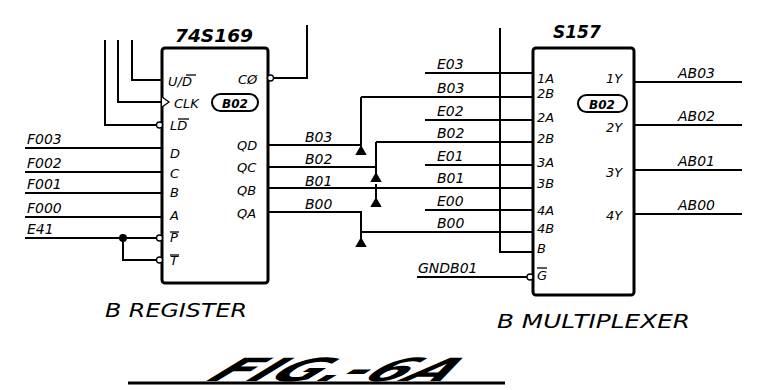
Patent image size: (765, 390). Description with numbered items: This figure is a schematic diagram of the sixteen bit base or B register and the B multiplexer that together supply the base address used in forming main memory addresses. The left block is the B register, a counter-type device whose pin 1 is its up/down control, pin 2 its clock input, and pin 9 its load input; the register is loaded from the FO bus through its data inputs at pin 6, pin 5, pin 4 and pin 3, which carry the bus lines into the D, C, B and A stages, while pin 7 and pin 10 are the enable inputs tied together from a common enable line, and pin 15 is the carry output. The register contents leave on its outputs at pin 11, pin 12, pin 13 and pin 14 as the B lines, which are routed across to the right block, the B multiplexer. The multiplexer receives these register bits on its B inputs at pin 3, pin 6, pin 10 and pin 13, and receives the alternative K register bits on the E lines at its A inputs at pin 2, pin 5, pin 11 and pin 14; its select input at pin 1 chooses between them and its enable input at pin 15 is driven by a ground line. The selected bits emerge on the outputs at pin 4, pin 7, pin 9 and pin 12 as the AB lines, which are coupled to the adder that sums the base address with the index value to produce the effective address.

The pin 1 (U/D input of B register; B select input of multiplexer) 1 is at (332, 140).
The pin 2 (CLK input of B register; 1A input of multiplexer) 2 is at (325, 73).
The pin 3 (A input of B register; 2B input of multiplexer) 3 is at (279, 149).
The pin 4 (B input of B register; 1Y output of multiplexer) 4 is at (383, 129).
The pin 5 (C input of B register; 2A input of multiplexer) 5 is at (279, 138).
The pin 6 (D input of B register; 2B input of multiplexer) 6 is at (279, 137).
The pin 7 (P input of B register; 2Y output of multiplexer) 7 is at (383, 175).
The pin 9 (LD input of B register; 3Y output of multiplexer) 9 is at (423, 105).
The pin 10 (T input of B register; 3B input of multiplexer) 10 is at (328, 217).
The pin 11 (QD output of B register; 3A input of multiplexer) 11 is at (400, 131).
The pin 12 (QC output of B register; 4Y output of multiplexer) 12 is at (505, 178).
The pin 13 (QB output of B register; 4B input of multiplexer) 13 is at (400, 203).
The pin 14 (QA output of B register; 4A input of multiplexer) 14 is at (400, 220).
The pin 15 (CO output of B register; G enable input of multiplexer) 15 is at (401, 152).